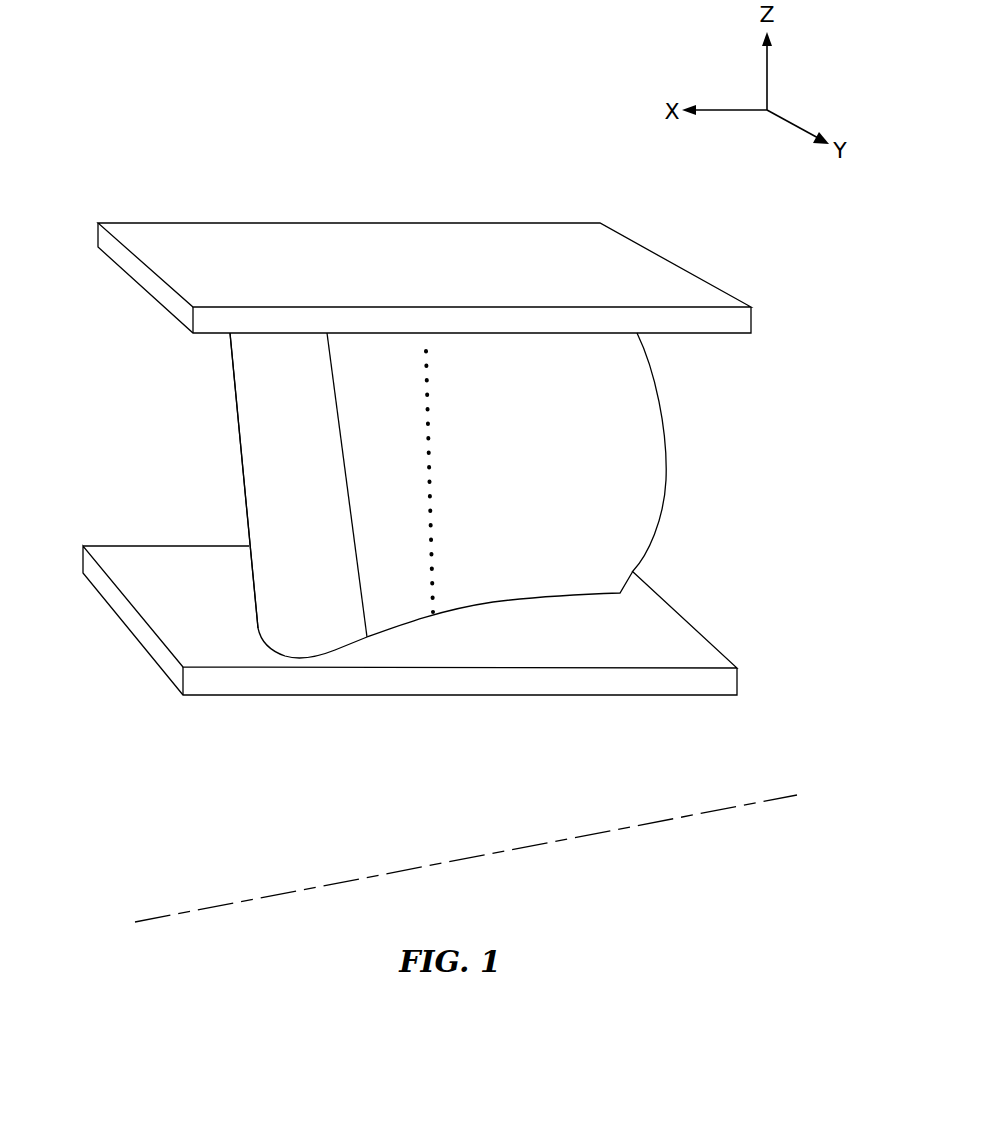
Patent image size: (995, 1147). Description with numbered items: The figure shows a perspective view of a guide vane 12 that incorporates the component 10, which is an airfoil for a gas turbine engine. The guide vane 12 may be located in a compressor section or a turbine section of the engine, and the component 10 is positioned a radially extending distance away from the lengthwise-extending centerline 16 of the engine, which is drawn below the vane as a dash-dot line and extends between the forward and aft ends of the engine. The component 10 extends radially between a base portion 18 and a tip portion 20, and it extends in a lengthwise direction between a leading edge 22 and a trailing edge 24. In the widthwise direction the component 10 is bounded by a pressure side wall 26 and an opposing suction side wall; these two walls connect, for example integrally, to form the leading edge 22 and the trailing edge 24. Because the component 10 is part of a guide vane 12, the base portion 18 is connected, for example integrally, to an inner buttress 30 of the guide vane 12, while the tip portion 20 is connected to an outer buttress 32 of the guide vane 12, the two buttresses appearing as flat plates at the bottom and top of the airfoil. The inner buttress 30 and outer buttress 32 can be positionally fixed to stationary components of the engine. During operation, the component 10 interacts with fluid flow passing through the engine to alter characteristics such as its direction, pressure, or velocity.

The component 10 is at (132, 470).
The guide vane 12 is at (152, 134).
The centerline 16 is at (772, 797).
The base portion 18 is at (492, 603).
The tip portion 20 is at (447, 333).
The leading edge 22 is at (240, 435).
The trailing edge 24 is at (662, 470).
The pressure side wall 26 is at (292, 482).
The inner buttress 30 is at (590, 677).
The outer buttress 32 is at (352, 254).